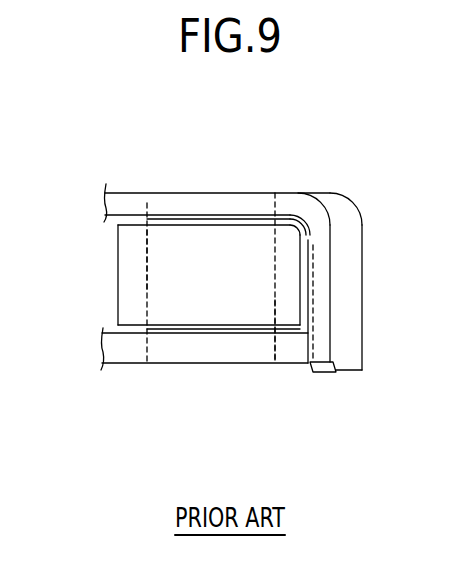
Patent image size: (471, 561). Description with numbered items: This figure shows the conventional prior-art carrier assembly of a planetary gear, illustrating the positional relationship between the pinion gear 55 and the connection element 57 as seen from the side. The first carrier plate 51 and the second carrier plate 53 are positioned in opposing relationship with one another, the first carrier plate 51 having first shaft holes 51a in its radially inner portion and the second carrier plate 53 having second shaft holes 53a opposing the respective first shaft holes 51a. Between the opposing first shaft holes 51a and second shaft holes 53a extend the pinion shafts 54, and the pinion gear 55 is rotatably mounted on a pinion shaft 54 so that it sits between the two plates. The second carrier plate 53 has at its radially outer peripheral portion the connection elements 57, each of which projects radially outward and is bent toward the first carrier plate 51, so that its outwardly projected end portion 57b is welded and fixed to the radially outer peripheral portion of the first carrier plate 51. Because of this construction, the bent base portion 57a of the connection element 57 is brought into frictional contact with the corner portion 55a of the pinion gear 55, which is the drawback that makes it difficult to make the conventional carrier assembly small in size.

The first carrier plate 51 is at (168, 350).
The first shaft holes 51a is at (270, 365).
The second carrier plate 53 is at (192, 200).
The second shaft holes 53a is at (147, 203).
The pinion shafts 54 is at (144, 251).
The pinion gear 55 is at (132, 290).
The corner portion 55a is at (290, 237).
The connection elements 57 is at (338, 297).
The base portion 57a is at (315, 217).
The end portions 57b is at (320, 350).